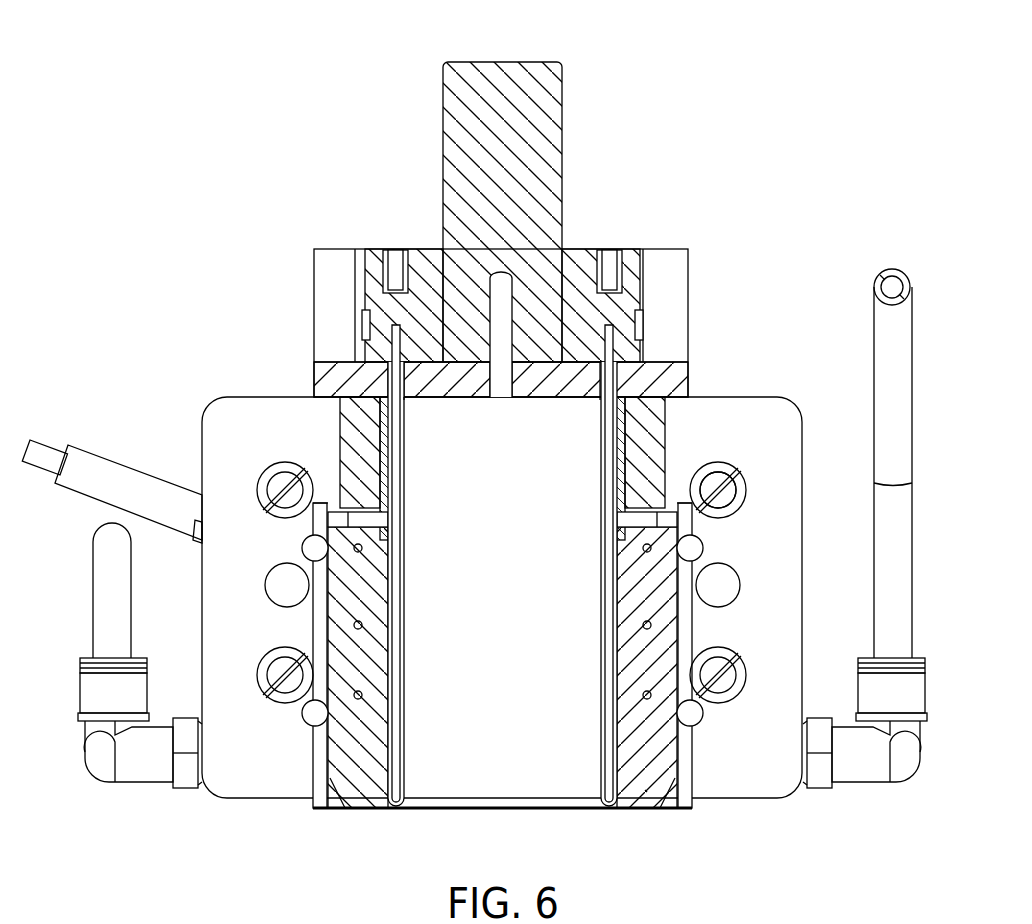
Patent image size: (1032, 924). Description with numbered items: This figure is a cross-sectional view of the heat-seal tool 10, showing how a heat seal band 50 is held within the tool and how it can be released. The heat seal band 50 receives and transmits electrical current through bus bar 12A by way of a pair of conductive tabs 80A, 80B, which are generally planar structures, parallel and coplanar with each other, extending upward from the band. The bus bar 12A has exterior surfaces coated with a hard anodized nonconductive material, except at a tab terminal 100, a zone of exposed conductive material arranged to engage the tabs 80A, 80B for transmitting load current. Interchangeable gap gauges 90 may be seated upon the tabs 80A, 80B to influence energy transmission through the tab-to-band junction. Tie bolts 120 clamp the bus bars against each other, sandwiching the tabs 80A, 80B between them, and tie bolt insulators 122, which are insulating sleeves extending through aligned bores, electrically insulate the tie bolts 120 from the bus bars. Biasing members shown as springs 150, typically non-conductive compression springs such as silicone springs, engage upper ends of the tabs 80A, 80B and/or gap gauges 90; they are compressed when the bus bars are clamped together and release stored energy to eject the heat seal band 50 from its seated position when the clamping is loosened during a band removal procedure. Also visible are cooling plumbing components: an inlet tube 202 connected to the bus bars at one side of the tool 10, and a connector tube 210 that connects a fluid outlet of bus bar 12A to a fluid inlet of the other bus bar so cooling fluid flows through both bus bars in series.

The heat-seal tool 10 is at (388, 118).
The bus bar 12A is at (630, 200).
The heat seal band 50 is at (530, 812).
The conductive tab 80A is at (333, 802).
The conductive tab 80B is at (680, 798).
The gap gauge 90 is at (647, 790).
The tab terminal 100 is at (463, 788).
The tie bolt 120 is at (715, 467).
The tie bolt insulator 122 is at (725, 485).
The spring 150 is at (345, 442).
The inlet tube 202 is at (97, 762).
The connector tube 210 is at (885, 352).